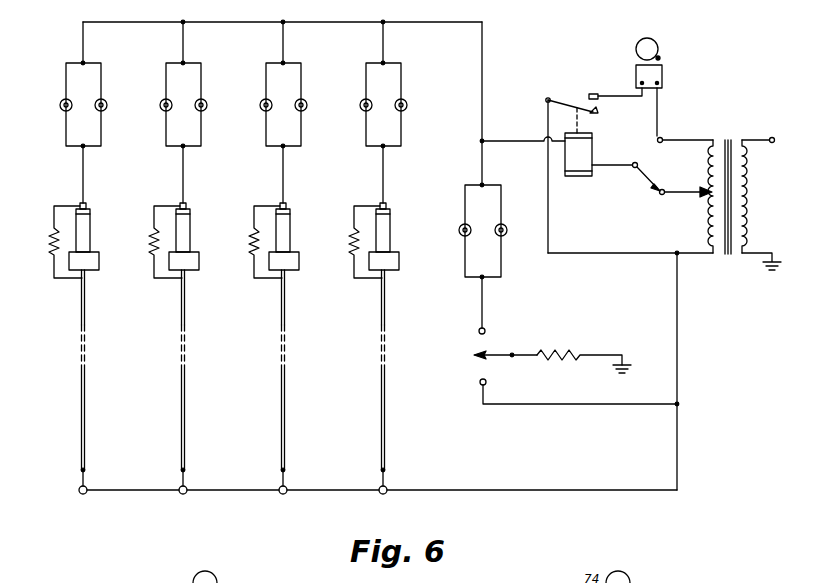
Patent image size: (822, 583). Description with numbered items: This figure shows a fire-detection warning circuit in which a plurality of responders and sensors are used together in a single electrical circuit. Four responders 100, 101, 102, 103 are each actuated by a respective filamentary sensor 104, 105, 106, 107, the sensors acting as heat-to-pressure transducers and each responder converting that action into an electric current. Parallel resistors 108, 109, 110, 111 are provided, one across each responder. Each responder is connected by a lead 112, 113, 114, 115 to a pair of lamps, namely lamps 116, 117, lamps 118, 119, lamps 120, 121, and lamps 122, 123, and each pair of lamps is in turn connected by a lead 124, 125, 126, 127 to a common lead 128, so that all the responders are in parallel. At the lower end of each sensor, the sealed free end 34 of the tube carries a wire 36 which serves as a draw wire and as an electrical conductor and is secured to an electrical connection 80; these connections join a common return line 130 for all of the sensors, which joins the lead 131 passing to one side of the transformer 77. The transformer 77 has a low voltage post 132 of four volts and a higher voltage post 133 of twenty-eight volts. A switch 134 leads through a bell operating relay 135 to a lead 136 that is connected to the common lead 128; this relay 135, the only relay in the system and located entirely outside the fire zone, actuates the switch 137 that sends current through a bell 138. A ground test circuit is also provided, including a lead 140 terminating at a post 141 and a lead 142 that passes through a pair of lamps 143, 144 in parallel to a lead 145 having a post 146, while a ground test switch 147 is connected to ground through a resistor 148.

The free end of the tube 34 is at (80, 471).
The wire 36 is at (164, 484).
The transformer 77 is at (728, 135).
The electrical connection 80 is at (181, 494).
The responder 100 is at (399, 262).
The responder 101 is at (299, 268).
The responder 102 is at (199, 268).
The responder 103 is at (99, 268).
The sensor 104 is at (380, 378).
The sensor 105 is at (286, 425).
The sensor 106 is at (186, 425).
The sensor 107 is at (86, 425).
The parallel resistor 108 is at (352, 250).
The parallel resistor 109 is at (252, 250).
The parallel resistor 110 is at (152, 248).
The parallel resistor 111 is at (52, 248).
The lead 112 is at (384, 186).
The lead 113 is at (284, 183).
The lead 114 is at (184, 183).
The lead 115 is at (84, 183).
The lamp 116 is at (407, 105).
The lamp 117 is at (364, 110).
The lamp 118 is at (307, 103).
The lamp 119 is at (261, 101).
The lamp 120 is at (207, 107).
The lamp 121 is at (164, 110).
The lamp 122 is at (107, 103).
The lamp 123 is at (64, 110).
The lead 124 is at (384, 52).
The lead 125 is at (284, 52).
The lead 126 is at (184, 52).
The lead 127 is at (84, 52).
The common lead 128 is at (480, 62).
The common return line 130 is at (560, 492).
The lead 131 is at (679, 360).
The low voltage post 132 is at (660, 196).
The higher voltage post 133 is at (661, 136).
The switch 134 is at (640, 168).
The bell operating relay 135 is at (592, 153).
The lead 136 is at (506, 140).
The switch 137 is at (570, 97).
The bell 138 is at (664, 80).
The lead 140 is at (645, 410).
The post 141 is at (487, 382).
The lead 142 is at (484, 168).
The lamp 143 is at (460, 232).
The lamp 144 is at (507, 227).
The lead 145 is at (484, 308).
The post 146 is at (486, 329).
The ground test switch 147 is at (500, 355).
The resistor 148 is at (572, 352).